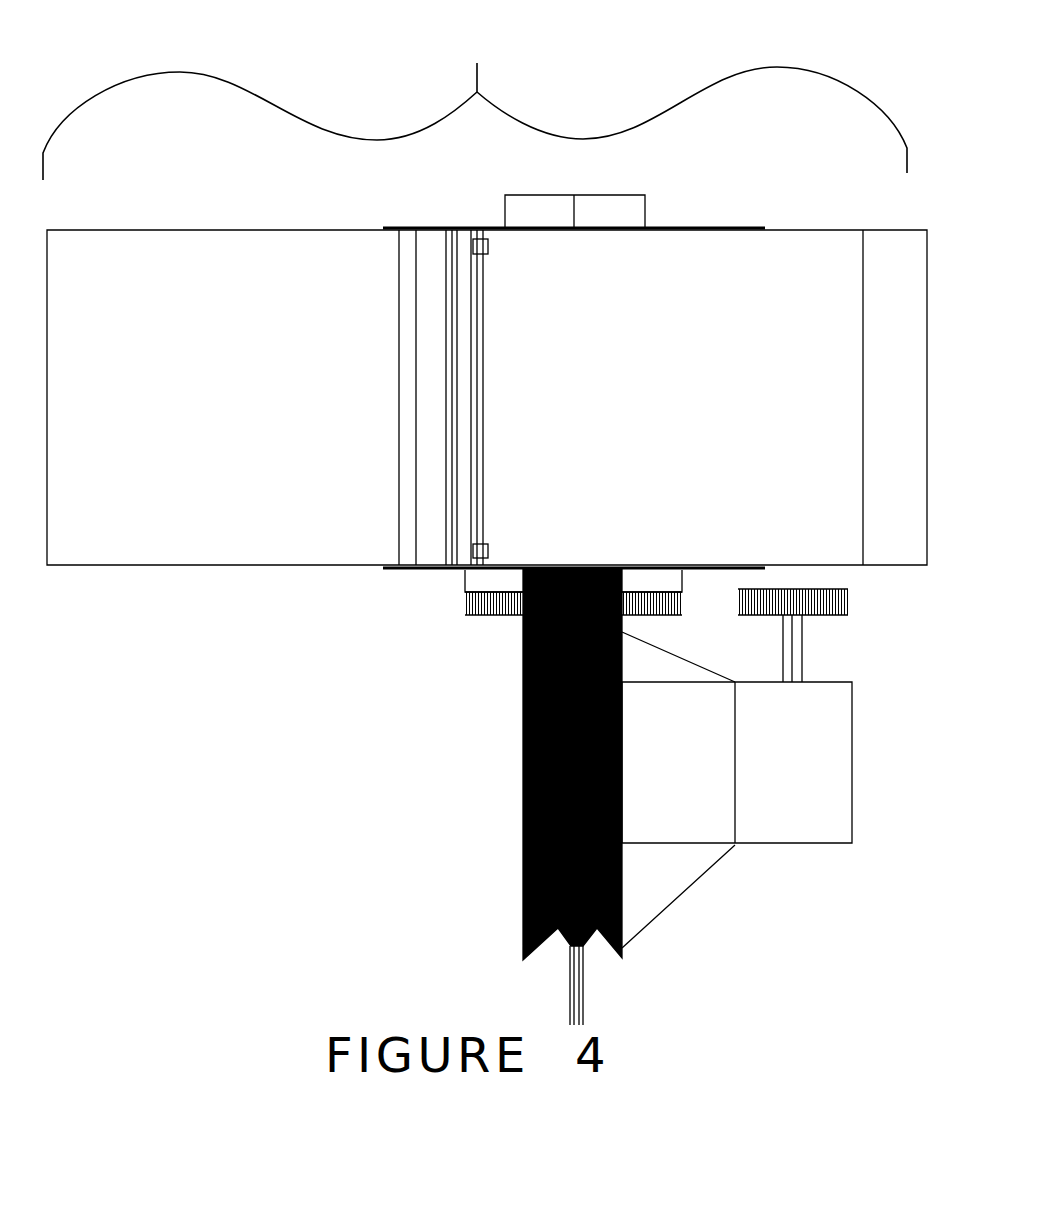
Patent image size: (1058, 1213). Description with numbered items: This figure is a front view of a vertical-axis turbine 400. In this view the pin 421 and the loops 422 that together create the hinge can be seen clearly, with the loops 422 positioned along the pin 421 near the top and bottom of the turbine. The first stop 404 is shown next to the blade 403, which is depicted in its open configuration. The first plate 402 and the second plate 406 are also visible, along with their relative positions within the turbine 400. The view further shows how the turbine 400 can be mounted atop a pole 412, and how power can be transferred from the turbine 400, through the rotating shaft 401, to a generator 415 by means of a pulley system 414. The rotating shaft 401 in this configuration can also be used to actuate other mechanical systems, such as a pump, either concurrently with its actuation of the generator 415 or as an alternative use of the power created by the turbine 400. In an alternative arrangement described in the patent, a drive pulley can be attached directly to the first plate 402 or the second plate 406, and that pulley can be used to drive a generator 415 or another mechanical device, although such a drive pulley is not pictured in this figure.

The vertical-axis turbine 400 is at (475, 94).
The rotating shaft 401 is at (588, 987).
The first plate 402 is at (428, 567).
The blade 403 is at (290, 355).
The first stop 404 is at (398, 419).
The second plate 406 is at (427, 230).
The pole 412 is at (523, 845).
The pulley system 414 is at (802, 617).
The generator 415 is at (842, 813).
The pin 421 is at (476, 432).
The loops 422 is at (481, 244).